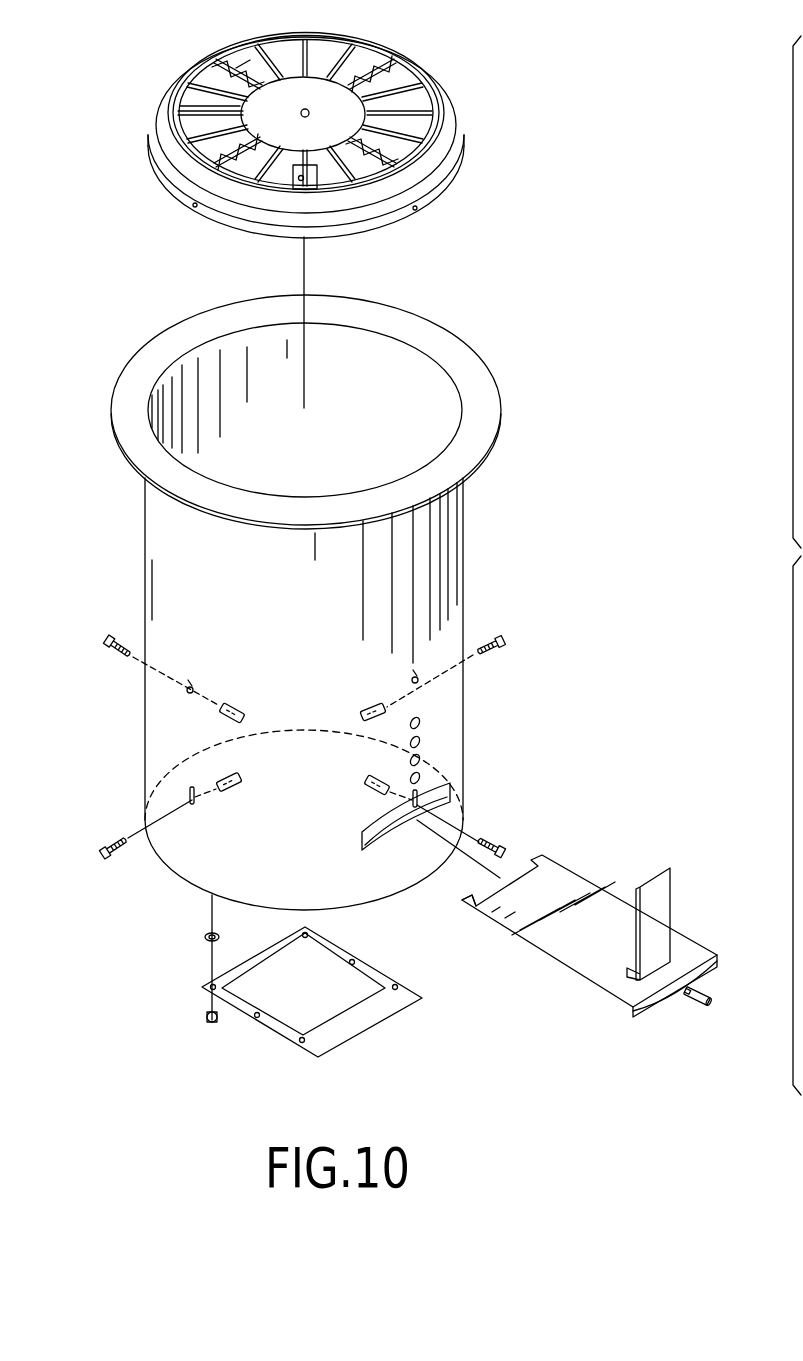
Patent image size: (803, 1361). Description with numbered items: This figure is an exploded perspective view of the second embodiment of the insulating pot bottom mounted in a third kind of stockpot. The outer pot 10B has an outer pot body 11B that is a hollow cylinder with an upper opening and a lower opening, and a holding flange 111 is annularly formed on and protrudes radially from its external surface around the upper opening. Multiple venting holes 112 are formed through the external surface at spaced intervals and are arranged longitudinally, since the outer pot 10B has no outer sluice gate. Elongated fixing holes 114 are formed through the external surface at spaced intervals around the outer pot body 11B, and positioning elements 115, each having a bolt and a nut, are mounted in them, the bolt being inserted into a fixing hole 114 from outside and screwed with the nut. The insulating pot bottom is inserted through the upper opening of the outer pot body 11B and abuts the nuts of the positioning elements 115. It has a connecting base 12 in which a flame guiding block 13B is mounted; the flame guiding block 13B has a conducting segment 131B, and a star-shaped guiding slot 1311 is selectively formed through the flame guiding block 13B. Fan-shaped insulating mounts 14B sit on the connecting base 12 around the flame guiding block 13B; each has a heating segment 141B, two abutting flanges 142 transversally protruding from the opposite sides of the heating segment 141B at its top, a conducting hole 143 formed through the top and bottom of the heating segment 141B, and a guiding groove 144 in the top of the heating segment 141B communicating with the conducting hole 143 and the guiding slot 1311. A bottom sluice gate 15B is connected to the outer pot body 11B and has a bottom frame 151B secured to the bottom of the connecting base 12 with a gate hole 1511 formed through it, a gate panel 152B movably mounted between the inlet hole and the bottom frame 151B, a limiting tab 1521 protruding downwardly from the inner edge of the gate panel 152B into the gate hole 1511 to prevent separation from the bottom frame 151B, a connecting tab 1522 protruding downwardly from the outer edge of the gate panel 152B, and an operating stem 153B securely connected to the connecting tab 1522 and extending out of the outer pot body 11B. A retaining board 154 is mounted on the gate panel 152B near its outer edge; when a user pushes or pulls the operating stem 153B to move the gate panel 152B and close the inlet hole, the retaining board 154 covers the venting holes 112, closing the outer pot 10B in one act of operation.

The outer pot 10B is at (557, 518).
The outer pot body 11B is at (157, 591).
The holding flange 111 is at (472, 372).
The venting holes 112 is at (420, 740).
The fixing holes 114 is at (190, 792).
The positioning elements 115 is at (108, 851).
The connecting base 12 is at (217, 203).
The flame guiding block 13B is at (382, 110).
The ring 131B is at (414, 62).
The guiding slot 1311 is at (307, 90).
The insulating mount 14B is at (187, 167).
The heating segment 141B is at (253, 62).
The abutting flanges 142 is at (190, 153).
The conducting hole 143 is at (253, 72).
The guiding groove 144 is at (175, 105).
The bottom sluice gate 15B is at (570, 1111).
The mounting plate 151B is at (366, 1034).
The gate hole 1511 is at (305, 1013).
The gate panel 152B is at (569, 983).
The limiting tab 1521 is at (475, 915).
The connecting tab 1522 is at (656, 1013).
The operating stem 153B is at (705, 1002).
The retaining board 154 is at (662, 885).